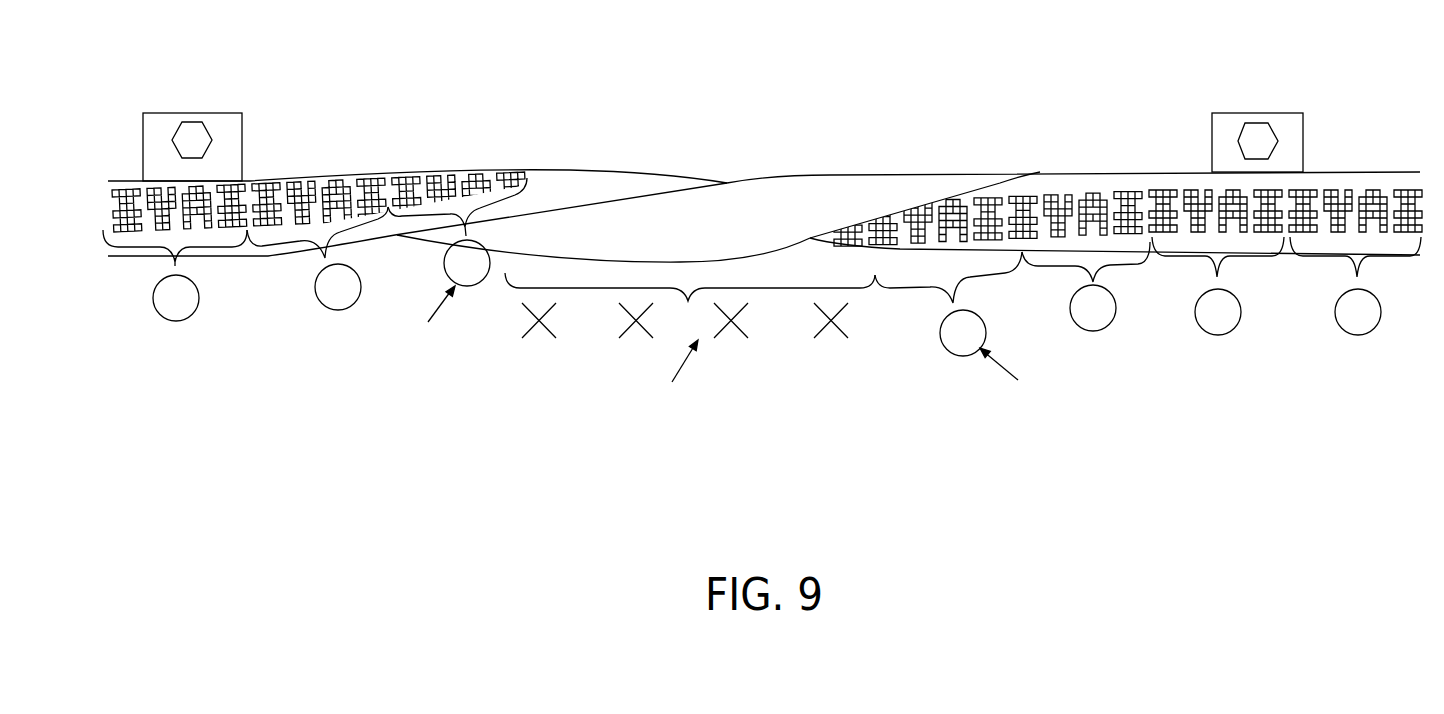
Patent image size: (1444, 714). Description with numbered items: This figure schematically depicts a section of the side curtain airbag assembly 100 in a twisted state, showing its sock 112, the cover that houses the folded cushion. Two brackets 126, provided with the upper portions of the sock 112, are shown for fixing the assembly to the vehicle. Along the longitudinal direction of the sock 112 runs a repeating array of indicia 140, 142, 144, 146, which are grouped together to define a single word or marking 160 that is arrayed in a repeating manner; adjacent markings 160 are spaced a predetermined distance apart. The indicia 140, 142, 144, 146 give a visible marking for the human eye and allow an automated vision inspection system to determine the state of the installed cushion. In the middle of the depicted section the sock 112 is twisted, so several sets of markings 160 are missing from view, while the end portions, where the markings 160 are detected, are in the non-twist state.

The side curtain airbag assembly 100 is at (793, 112).
The sock 112 is at (563, 182).
The bracket 126 is at (224, 144).
The indicium 140 is at (1030, 186).
The indicium 142 is at (1063, 191).
The indicium 144 is at (1095, 184).
The indicium 146 is at (1126, 184).
The marking 160 is at (325, 258).